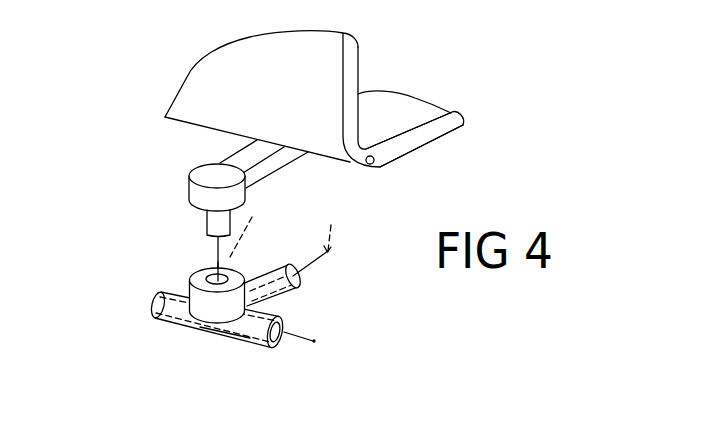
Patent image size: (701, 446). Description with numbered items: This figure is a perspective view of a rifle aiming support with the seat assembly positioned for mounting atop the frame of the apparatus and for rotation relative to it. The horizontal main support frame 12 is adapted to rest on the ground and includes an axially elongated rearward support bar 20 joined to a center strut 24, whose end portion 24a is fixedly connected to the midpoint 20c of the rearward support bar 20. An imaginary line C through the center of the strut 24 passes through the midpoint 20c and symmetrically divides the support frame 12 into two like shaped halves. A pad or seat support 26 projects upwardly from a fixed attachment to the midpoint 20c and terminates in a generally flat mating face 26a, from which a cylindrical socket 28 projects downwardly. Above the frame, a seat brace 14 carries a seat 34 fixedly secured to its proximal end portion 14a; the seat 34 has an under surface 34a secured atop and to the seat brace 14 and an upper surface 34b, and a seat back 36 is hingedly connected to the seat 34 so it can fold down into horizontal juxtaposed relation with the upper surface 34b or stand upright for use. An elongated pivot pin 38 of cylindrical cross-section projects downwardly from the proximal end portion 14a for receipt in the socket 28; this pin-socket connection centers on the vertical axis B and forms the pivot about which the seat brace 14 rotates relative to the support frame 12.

The horizontal main support frame 12 is at (166, 366).
The seat brace 14 is at (178, 196).
The proximal end portion 14a is at (243, 153).
The rearward support bar 20 is at (255, 346).
The midpoint of the rearward support bar 20c is at (222, 337).
The center strut 24 is at (285, 292).
The end portion of the strut 24a is at (250, 280).
The seat support 26 is at (189, 293).
The mating face 26a is at (194, 275).
The socket 28 is at (226, 275).
The seat 34 is at (444, 149).
The under surface 34a is at (402, 165).
The upper surface 34b is at (421, 106).
The seat back 36 is at (174, 76).
The pivot pin 38 is at (207, 229).
The vertical axis B is at (252, 217).
The imaginary line C is at (331, 225).